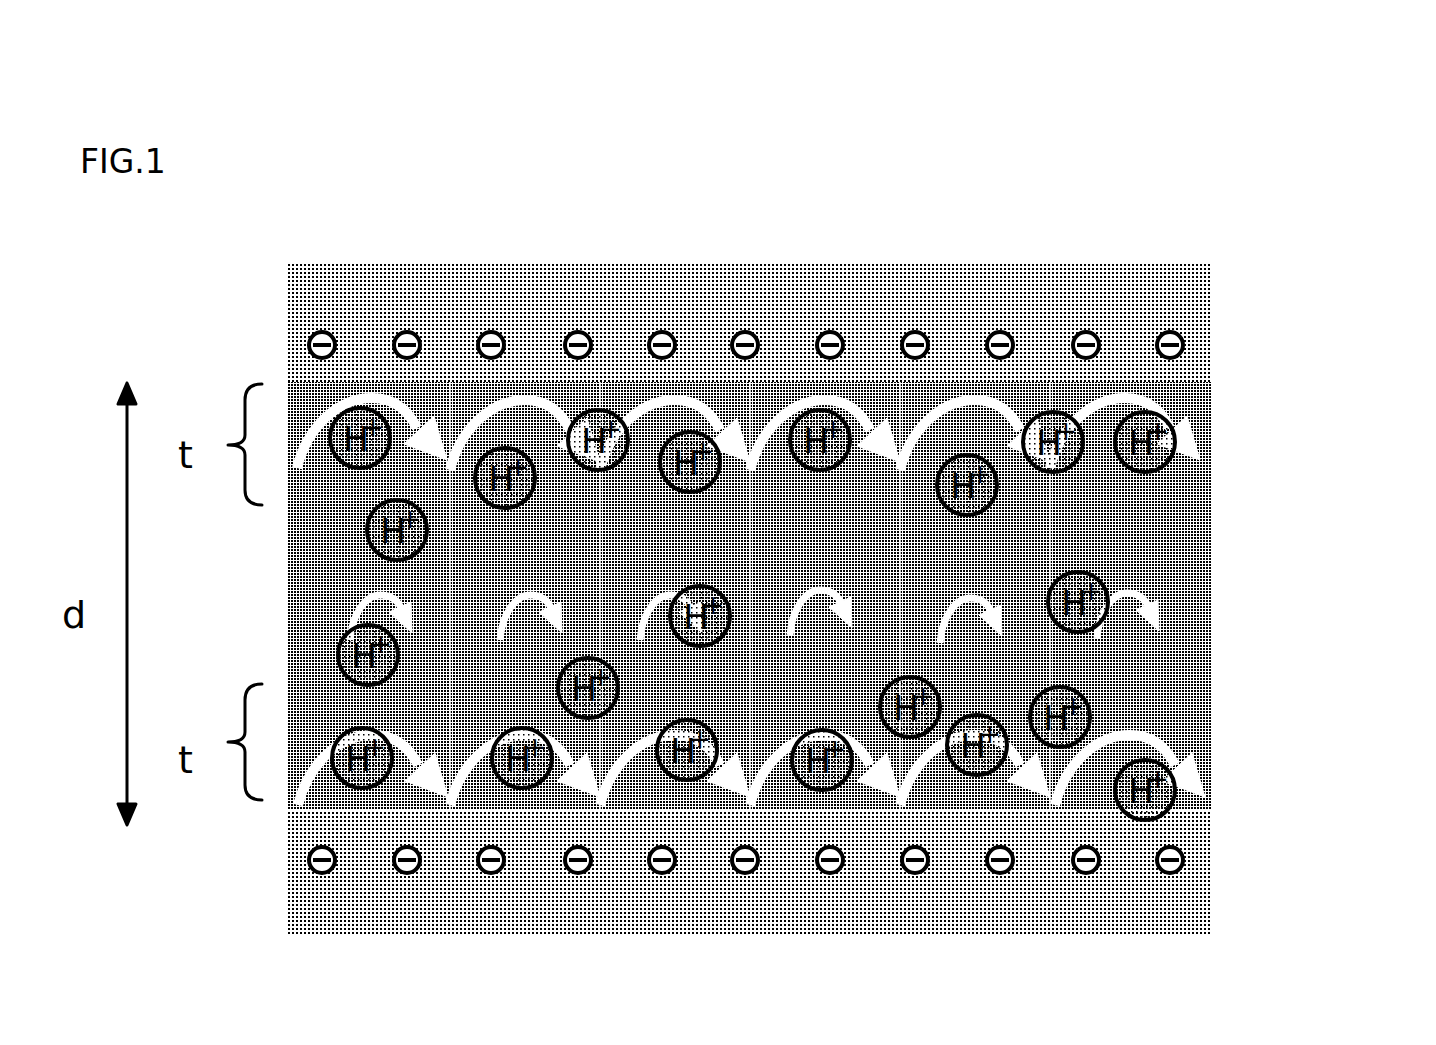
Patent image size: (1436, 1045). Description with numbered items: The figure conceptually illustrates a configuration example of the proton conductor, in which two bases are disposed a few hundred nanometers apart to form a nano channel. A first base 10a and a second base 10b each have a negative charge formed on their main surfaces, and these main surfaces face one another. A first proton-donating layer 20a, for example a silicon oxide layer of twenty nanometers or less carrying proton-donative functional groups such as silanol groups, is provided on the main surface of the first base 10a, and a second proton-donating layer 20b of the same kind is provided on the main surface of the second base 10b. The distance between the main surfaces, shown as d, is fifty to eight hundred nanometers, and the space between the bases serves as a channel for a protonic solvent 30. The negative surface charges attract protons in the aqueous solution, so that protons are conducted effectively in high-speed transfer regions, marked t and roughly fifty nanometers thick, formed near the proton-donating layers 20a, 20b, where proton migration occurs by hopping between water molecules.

The first base 10a is at (1190, 892).
The second base 10b is at (1190, 300).
The first proton-donating layer 20a is at (1190, 820).
The second proton-donating layer 20b is at (1190, 368).
The protonic solvent 30 is at (1190, 610).